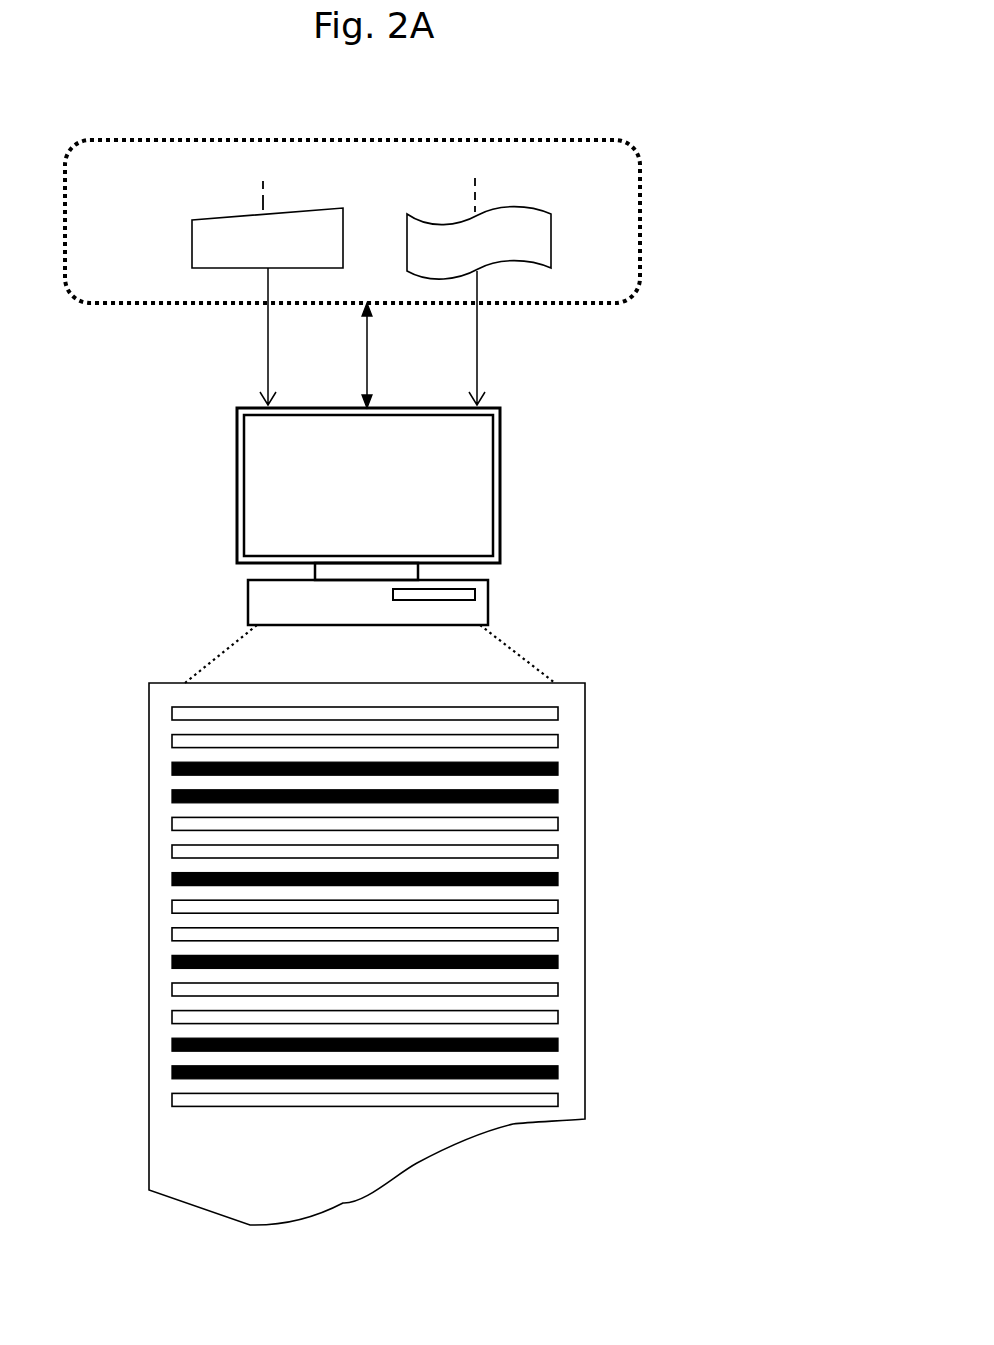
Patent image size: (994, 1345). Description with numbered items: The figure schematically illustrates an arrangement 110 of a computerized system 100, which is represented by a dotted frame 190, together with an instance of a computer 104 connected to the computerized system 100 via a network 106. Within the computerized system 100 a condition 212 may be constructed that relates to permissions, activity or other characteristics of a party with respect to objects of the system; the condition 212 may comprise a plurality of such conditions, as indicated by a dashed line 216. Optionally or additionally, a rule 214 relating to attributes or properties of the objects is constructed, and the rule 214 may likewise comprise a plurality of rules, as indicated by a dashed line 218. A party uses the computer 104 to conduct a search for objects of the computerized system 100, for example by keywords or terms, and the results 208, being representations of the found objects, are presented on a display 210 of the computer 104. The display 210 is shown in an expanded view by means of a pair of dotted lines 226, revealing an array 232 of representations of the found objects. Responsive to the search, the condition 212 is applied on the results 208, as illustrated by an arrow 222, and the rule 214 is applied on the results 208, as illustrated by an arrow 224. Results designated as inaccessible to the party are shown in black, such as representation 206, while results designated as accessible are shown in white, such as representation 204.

The computerized system 100 is at (512, 120).
The computer 104 is at (409, 516).
The network 106 is at (370, 360).
The arrangement 110 is at (684, 332).
The dotted frame 190 is at (630, 148).
The representation 204 is at (172, 742).
The representation 206 is at (172, 797).
The results 208 is at (252, 1123).
The display 210 is at (486, 481).
The condition 212 is at (551, 245).
The rule 214 is at (192, 244).
The dashed line 216 is at (477, 201).
The dashed line 218 is at (262, 198).
The arrow 222 is at (479, 373).
The arrow 224 is at (265, 363).
The dotted line 226 is at (218, 655).
The array 232 is at (592, 813).